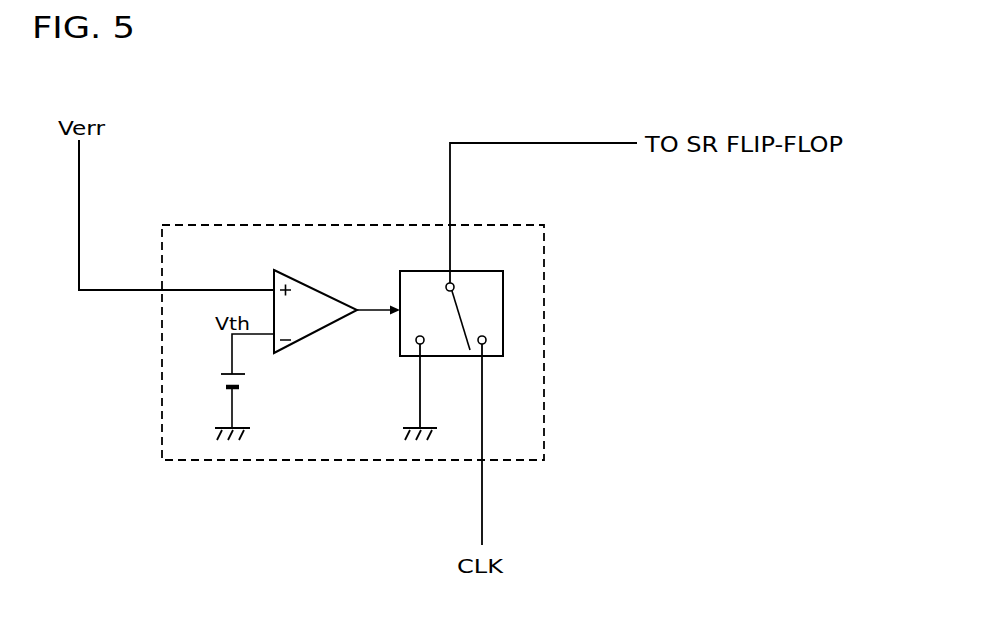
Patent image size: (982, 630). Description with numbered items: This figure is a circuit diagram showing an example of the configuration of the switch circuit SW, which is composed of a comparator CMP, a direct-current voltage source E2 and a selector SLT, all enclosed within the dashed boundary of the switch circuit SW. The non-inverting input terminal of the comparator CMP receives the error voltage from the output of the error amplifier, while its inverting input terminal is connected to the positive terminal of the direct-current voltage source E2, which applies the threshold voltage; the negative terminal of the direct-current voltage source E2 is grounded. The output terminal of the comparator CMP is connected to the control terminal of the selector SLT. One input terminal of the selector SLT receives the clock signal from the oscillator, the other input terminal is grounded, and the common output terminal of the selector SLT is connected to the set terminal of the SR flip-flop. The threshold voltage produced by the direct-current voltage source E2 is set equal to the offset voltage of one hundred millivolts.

The switch circuit SW is at (310, 226).
The comparator CMP is at (331, 276).
The selector SLT is at (400, 346).
The direct-current voltage source E2 is at (221, 381).